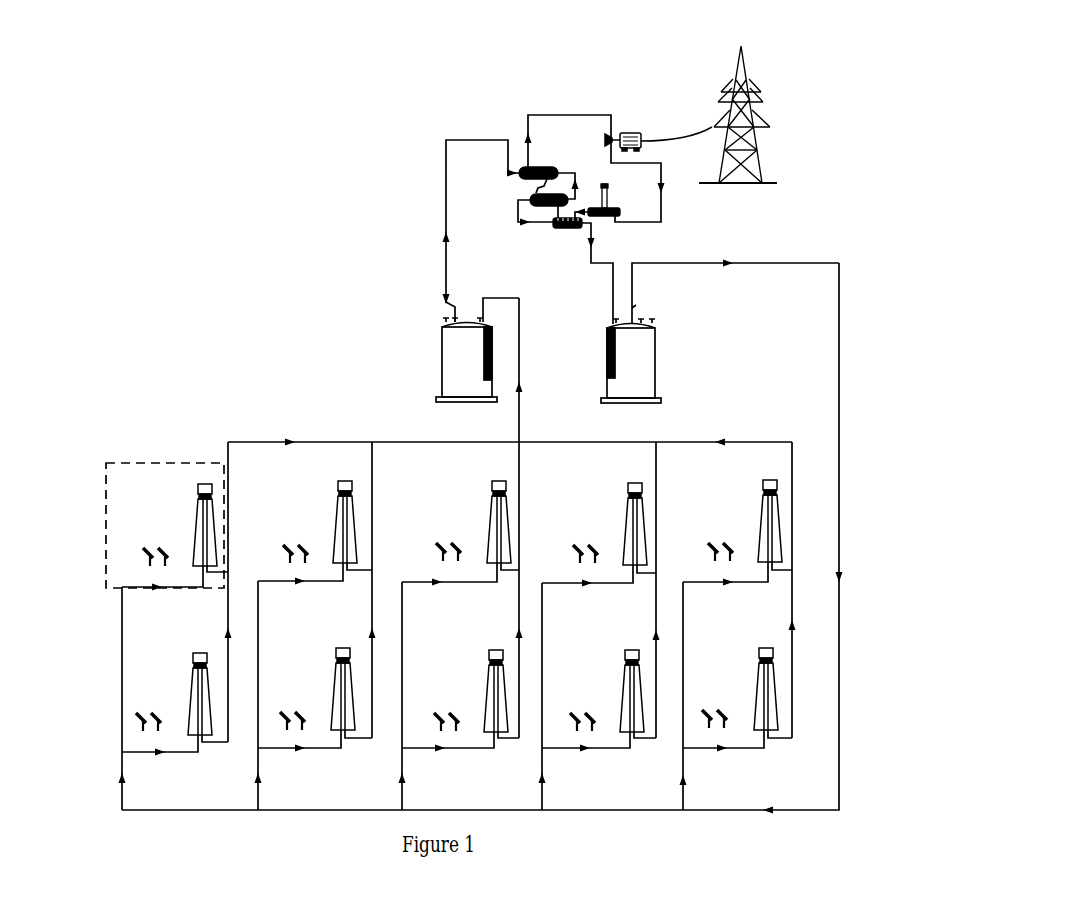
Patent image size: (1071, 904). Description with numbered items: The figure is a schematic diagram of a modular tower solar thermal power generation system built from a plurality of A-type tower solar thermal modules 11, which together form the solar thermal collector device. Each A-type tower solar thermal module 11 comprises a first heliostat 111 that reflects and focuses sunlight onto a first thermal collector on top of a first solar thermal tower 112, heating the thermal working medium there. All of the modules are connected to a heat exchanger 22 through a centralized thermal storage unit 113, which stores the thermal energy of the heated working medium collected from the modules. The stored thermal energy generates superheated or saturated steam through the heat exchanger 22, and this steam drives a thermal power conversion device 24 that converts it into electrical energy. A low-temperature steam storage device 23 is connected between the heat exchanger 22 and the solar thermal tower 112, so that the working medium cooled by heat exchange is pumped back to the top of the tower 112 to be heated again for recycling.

The A-type tower solar thermal module 11 is at (162, 460).
The first heliostat 111 is at (147, 552).
The first solar thermal tower 112 is at (205, 483).
The centralized thermal storage unit 113 is at (442, 368).
The heat exchanger 22 is at (530, 167).
The low-temperature steam storage device 23 is at (657, 367).
The thermal power conversion device 24 is at (630, 130).